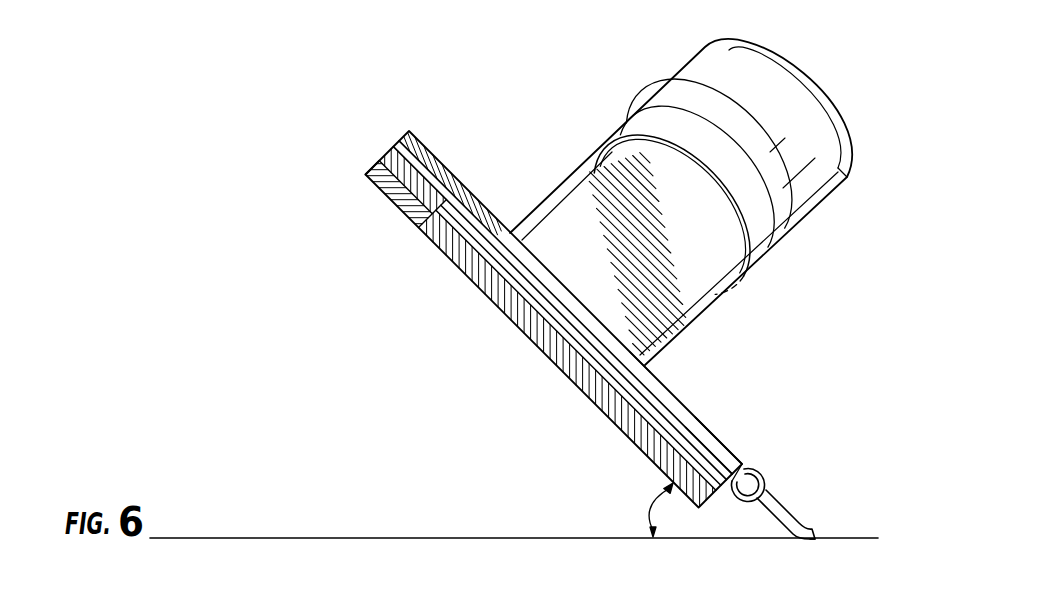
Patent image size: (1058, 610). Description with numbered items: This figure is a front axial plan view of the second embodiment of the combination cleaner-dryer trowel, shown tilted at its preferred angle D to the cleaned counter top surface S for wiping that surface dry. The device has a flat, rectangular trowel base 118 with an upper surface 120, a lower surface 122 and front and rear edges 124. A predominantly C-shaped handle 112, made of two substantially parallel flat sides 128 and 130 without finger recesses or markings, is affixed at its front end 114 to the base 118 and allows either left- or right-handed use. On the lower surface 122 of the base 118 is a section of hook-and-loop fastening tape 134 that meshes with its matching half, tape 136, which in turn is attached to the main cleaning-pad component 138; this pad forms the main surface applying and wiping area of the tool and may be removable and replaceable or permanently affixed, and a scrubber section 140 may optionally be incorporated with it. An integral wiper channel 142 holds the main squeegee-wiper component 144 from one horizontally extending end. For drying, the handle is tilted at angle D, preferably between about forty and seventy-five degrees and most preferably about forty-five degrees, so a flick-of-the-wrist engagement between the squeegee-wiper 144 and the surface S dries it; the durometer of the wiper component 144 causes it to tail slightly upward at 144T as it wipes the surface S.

The C-shaped handle 112 is at (866, 190).
The front end 114 is at (641, 359).
The trowel base 118 is at (452, 148).
The upper surface 120 is at (474, 184).
The lower surface 122 is at (505, 238).
The front and rear edges 124 is at (705, 436).
The flat side 128 is at (838, 176).
The flat side 130 is at (687, 80).
The hook-and-loop fastening tape 134 is at (442, 200).
The tape 136 is at (520, 277).
The cleaning-pad component 138 is at (466, 258).
The scrubber section 140 is at (375, 181).
The wiper channel 142 is at (768, 483).
The squeegee-wiper component 144 is at (802, 527).
The upward tail of wiper component 144T is at (816, 542).
The cleaned counter top surface S is at (522, 536).
The angle D is at (648, 507).